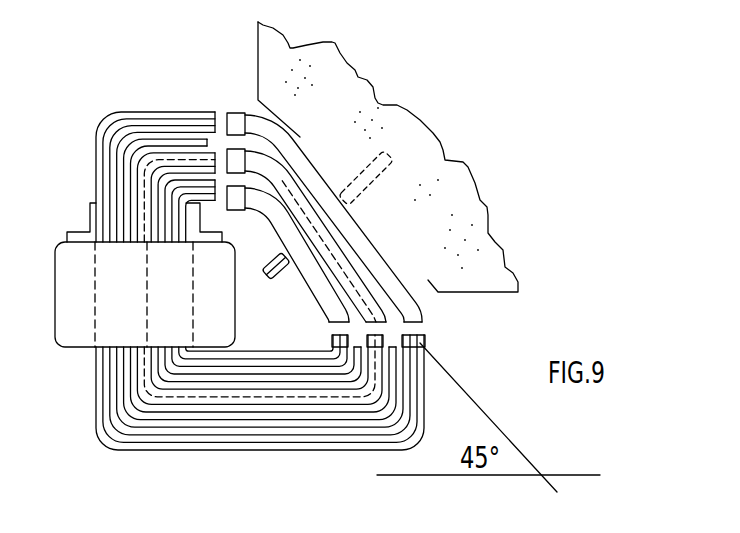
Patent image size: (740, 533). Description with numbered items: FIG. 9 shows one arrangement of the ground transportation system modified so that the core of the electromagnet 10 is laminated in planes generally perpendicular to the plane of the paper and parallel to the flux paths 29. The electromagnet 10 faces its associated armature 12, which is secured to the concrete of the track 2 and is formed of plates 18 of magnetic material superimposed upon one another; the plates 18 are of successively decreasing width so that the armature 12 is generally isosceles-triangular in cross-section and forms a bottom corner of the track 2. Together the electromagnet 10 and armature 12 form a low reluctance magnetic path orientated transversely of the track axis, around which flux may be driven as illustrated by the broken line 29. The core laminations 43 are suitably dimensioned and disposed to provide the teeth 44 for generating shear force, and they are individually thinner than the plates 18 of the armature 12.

The track 2 is at (425, 162).
The electromagnet 10 is at (207, 452).
The armature 12 is at (424, 307).
The plates 18 is at (300, 175).
The flux path 29 is at (281, 405).
The core laminations 43 is at (155, 140).
The teeth 44 is at (215, 160).